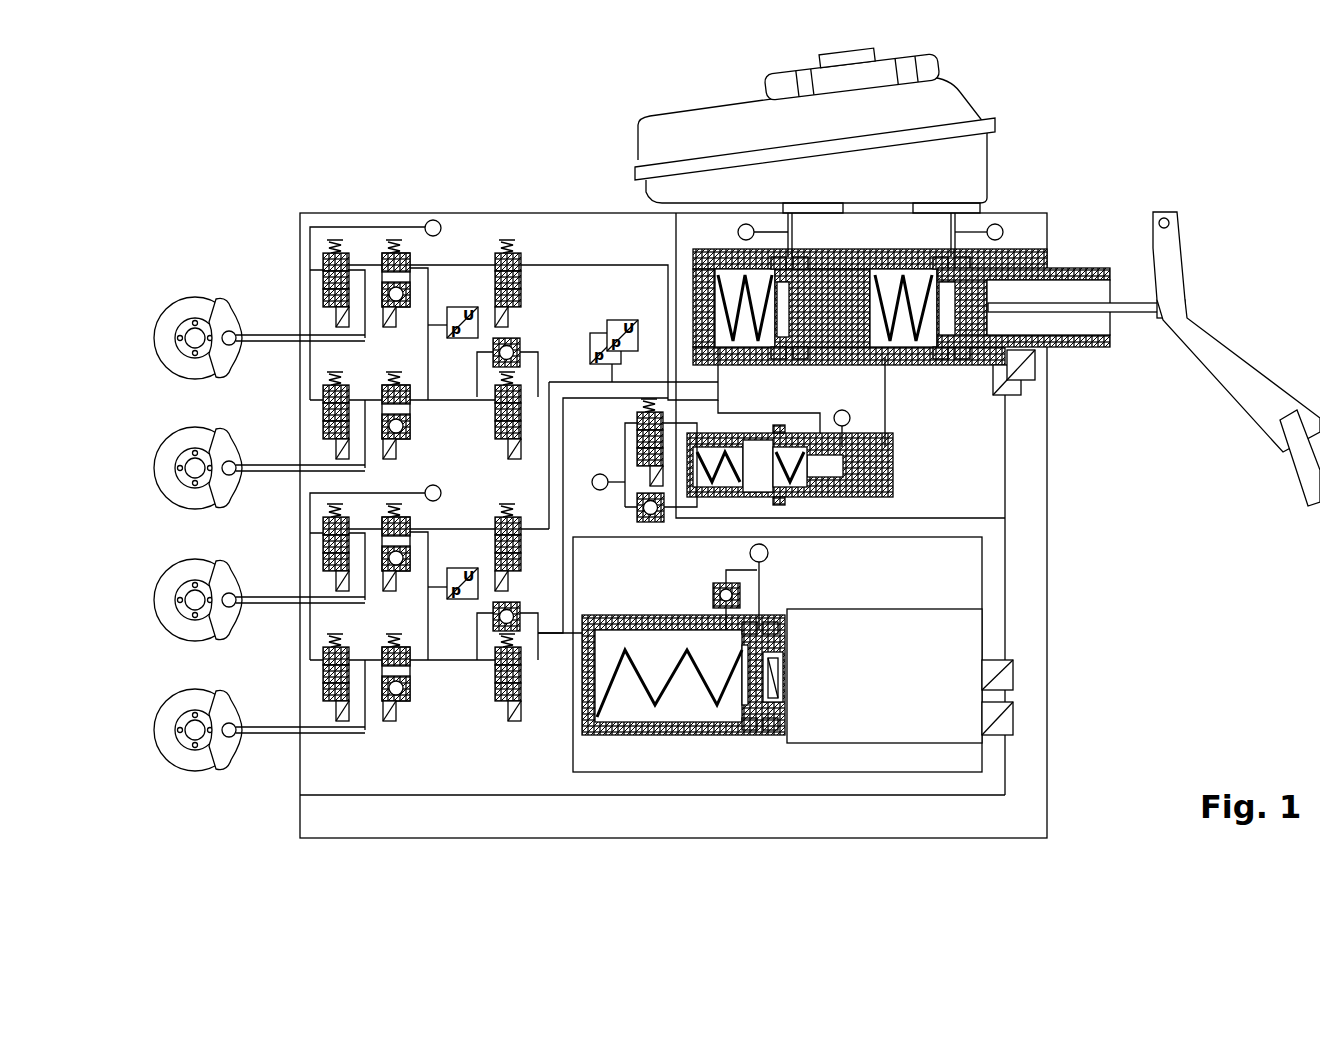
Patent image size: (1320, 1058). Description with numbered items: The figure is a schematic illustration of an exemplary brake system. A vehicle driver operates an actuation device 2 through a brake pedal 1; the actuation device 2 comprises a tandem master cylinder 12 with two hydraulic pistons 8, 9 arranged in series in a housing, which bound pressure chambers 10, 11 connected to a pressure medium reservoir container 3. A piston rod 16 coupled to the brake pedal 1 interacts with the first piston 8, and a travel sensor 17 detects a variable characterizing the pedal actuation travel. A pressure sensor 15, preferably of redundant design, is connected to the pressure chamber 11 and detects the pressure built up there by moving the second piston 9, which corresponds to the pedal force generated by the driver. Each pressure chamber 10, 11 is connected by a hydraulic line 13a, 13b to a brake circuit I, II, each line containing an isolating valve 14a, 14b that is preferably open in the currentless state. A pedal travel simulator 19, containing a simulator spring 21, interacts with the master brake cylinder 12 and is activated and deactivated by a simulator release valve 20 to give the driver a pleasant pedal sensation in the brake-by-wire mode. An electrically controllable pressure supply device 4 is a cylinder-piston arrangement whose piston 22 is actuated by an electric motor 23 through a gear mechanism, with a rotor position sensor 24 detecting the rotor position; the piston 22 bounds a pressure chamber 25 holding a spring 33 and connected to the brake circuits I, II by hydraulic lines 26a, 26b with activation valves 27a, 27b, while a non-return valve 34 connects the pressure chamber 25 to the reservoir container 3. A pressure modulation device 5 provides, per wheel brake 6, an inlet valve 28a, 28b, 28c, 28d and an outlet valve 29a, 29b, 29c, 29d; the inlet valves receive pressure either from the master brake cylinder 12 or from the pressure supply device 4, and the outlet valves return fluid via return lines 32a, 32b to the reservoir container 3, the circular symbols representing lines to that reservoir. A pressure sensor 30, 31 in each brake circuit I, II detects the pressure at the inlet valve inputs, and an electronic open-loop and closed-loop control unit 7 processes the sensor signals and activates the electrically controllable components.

The brake pedal 1 is at (1222, 367).
The actuation device 2 is at (1020, 212).
The pressure medium reservoir container 3 is at (978, 108).
The pressure supply device 4 is at (943, 775).
The pressure modulation device 5 is at (549, 240).
The wheel brake 6 is at (238, 355).
The electronic open-loop and closed-loop control unit 7 is at (750, 838).
The first piston 8 is at (981, 348).
The second piston 9 is at (840, 333).
The pressure chamber 10 is at (935, 285).
The pressure chamber 11 is at (743, 287).
The tandem master cylinder 12 is at (920, 360).
The hydraulic line 13a is at (580, 262).
The hydraulic line 13b is at (537, 470).
The isolating valve 14a is at (520, 285).
The isolating valve 14b is at (520, 560).
The pressure sensor 15 is at (590, 345).
The piston rod 16 is at (1134, 313).
The travel sensor 17 is at (1033, 383).
The pedal travel simulator 19 is at (898, 472).
The simulator release valve 20 is at (637, 436).
The simulator spring 21 is at (725, 457).
The piston 22 is at (770, 625).
The electric motor 23 is at (965, 638).
The rotor position sensor 24 is at (1020, 680).
The pressure chamber 25 is at (688, 690).
The hydraulic line 26a is at (567, 455).
The hydraulic line 26b is at (552, 668).
The activation valve 27a is at (503, 440).
The activation valve 27b is at (500, 705).
The inlet valve 28a is at (410, 262).
The inlet valve 28b is at (413, 407).
The inlet valve 28c is at (413, 528).
The inlet valve 28d is at (413, 668).
The outlet valve 29a is at (323, 285).
The outlet valve 29b is at (323, 415).
The outlet valve 29c is at (323, 545).
The outlet valve 29d is at (323, 679).
The pressure sensor 30 is at (462, 340).
The pressure sensor 31 is at (462, 602).
The return line 32a is at (375, 226).
The return line 32b is at (343, 490).
The spring 33 is at (638, 685).
The non-return valve 34 is at (713, 595).
The brake circuit I is at (432, 288).
The brake circuit II is at (432, 548).